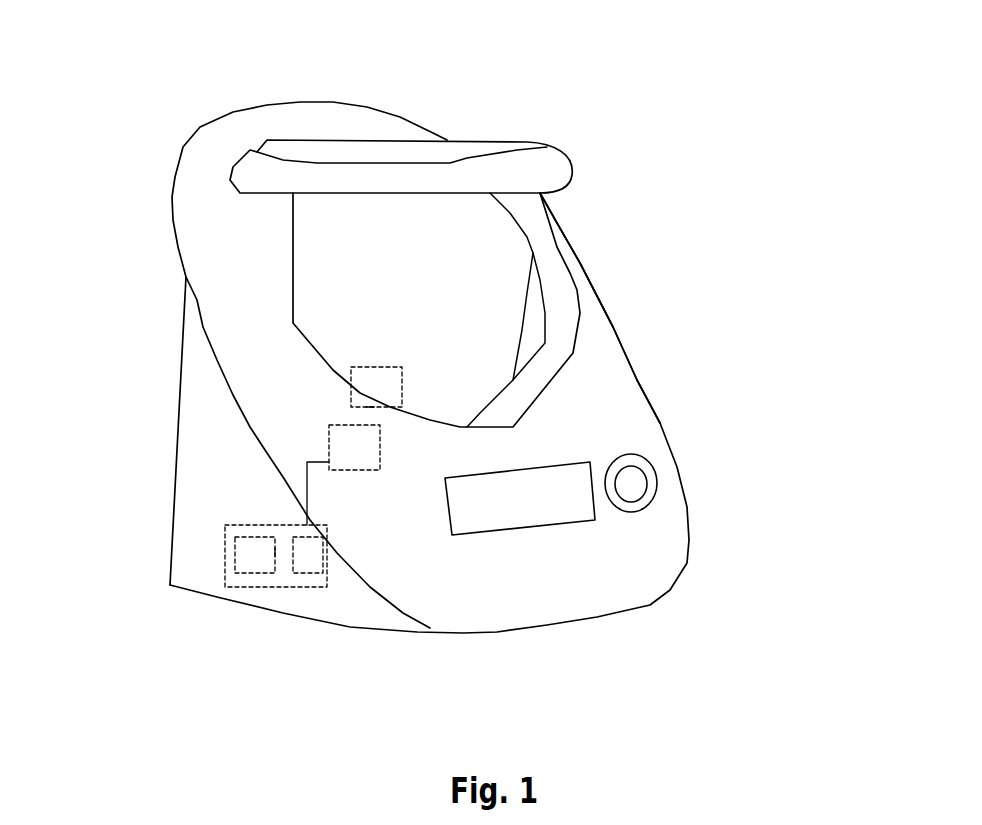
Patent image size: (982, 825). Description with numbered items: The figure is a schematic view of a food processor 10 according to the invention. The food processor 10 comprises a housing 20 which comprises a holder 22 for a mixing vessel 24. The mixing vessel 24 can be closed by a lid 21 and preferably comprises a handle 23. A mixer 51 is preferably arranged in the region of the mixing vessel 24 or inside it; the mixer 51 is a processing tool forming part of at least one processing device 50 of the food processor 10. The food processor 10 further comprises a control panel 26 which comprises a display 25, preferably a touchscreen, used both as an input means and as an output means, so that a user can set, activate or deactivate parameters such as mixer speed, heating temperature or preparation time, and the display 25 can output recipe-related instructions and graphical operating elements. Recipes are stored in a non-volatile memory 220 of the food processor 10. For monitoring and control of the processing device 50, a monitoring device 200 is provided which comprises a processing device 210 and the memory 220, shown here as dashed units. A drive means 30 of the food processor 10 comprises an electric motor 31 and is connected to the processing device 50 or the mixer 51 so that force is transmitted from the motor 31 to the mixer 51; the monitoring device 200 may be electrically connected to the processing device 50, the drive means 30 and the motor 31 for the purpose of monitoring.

The food processor 10 is at (158, 84).
The housing 20 is at (180, 426).
The lid 21 is at (500, 147).
The holder 22 is at (331, 310).
The handle 23 is at (568, 300).
The mixing vessel 24 is at (500, 257).
The display 25 is at (507, 523).
The control panel 26 is at (683, 517).
The drive means 30 is at (357, 470).
The motor 31 is at (357, 470).
The processing device 50 is at (292, 385).
The mixer 51 is at (350, 390).
The monitoring device 200 is at (257, 587).
The processing device 210 is at (237, 558).
The non-volatile memory 220 is at (302, 573).